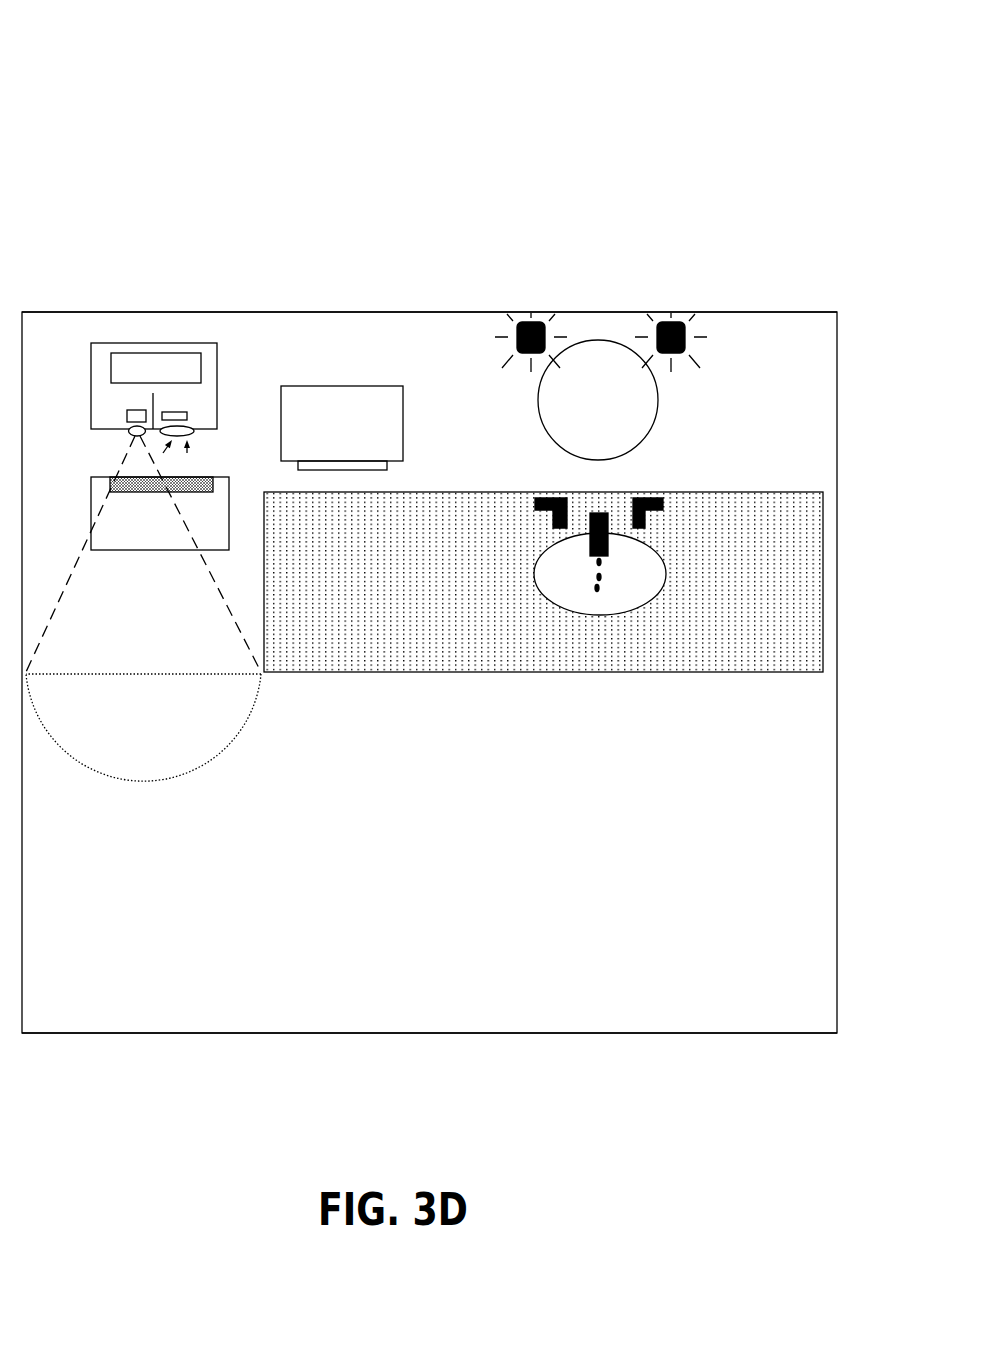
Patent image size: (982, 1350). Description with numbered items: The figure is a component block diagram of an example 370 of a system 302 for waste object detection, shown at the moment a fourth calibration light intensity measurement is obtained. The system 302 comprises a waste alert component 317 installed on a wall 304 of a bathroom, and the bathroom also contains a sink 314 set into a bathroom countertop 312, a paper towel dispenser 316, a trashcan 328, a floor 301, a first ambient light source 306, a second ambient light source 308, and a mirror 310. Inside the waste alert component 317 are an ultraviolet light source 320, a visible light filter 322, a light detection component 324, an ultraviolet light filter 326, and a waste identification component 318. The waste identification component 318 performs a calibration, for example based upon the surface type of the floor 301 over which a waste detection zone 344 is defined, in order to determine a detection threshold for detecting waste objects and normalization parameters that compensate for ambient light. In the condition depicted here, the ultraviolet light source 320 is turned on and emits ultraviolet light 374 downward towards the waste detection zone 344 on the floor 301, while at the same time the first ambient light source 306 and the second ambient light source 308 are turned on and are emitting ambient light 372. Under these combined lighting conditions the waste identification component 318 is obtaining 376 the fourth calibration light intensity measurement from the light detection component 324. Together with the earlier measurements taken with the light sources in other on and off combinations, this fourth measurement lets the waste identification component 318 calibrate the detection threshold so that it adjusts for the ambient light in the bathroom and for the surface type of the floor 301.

The example 370 is at (180, 48).
The system 302 is at (168, 290).
The floor 301 is at (680, 795).
The wall 304 is at (328, 311).
The first ambient light source 306 is at (530, 322).
The second ambient light source 308 is at (677, 322).
The mirror 310 is at (572, 346).
The bathroom countertop 312 is at (693, 492).
The sink 314 is at (576, 480).
The paper towel dispenser 316 is at (313, 386).
The waste alert component 317 is at (217, 355).
The waste identification component 318 is at (113, 353).
The ultraviolet light source 320 is at (127, 411).
The visible light filter 322 is at (129, 430).
The light detection component 324 is at (186, 412).
The ultraviolet light filter 326 is at (192, 430).
The trashcan 328 is at (98, 477).
The waste detection zone 344 is at (210, 772).
The ambient light 372 is at (494, 389).
The ultraviolet light 374 is at (65, 585).
The obtaining 376 is at (207, 458).